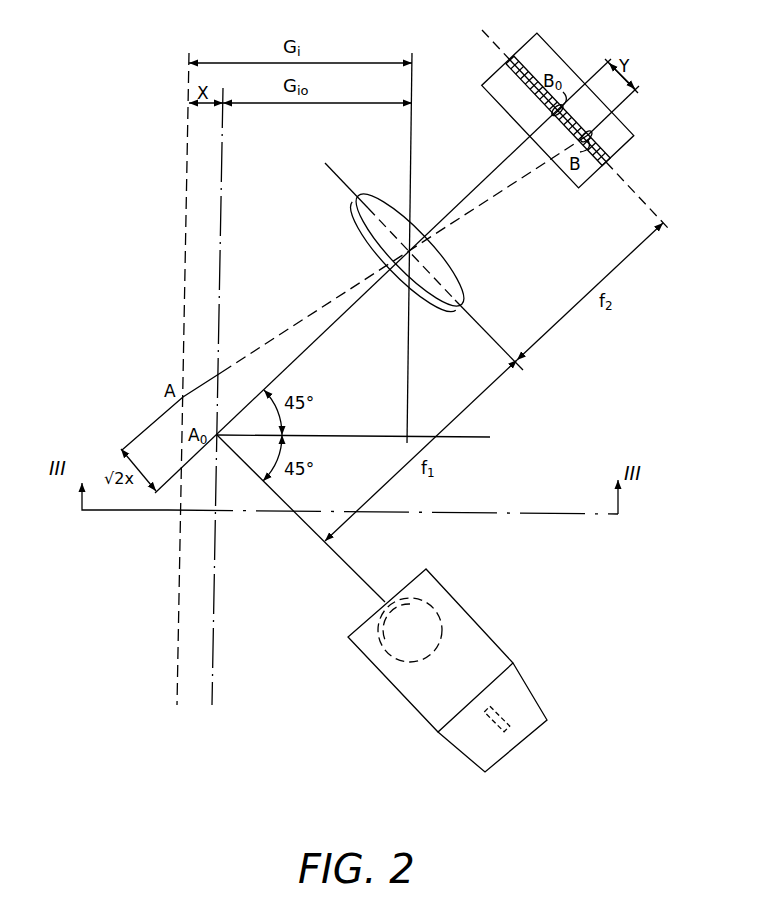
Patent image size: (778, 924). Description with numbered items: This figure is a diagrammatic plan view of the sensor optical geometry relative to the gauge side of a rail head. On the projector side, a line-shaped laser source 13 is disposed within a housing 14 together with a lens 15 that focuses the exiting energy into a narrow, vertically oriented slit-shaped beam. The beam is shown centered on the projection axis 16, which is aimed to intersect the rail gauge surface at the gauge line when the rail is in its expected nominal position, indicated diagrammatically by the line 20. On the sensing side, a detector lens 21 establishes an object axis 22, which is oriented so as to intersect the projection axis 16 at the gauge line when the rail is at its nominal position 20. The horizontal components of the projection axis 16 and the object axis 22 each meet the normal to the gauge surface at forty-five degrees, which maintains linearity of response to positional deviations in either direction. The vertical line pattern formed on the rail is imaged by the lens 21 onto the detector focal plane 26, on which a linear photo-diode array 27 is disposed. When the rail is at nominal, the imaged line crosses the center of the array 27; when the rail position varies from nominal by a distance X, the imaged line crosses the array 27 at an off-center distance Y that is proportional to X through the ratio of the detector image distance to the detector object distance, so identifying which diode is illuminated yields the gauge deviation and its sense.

The laser source 13 is at (507, 735).
The housing 14 is at (489, 636).
The lens 15 is at (440, 606).
The projection axis 16 is at (362, 582).
The nominal position 20 is at (233, 230).
The lens 21 is at (357, 228).
The object axis 22 is at (496, 166).
The detector focal plane 26 is at (553, 48).
The photo-diode array 27 is at (513, 60).